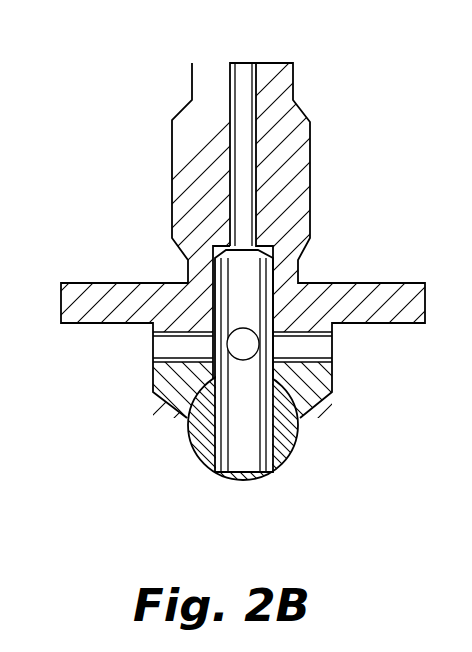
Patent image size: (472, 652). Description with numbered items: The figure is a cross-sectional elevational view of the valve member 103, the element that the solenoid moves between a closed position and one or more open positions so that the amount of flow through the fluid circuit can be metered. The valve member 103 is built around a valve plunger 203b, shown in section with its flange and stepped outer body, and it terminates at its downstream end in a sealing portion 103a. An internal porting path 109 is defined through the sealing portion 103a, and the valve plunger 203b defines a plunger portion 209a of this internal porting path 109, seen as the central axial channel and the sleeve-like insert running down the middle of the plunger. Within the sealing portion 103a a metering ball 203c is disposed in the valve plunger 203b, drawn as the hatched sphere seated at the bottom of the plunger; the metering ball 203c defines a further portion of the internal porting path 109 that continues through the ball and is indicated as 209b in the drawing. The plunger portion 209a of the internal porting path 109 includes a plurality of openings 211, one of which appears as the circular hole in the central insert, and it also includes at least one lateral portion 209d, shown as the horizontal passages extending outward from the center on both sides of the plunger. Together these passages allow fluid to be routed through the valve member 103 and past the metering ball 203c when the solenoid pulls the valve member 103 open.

The valve member 103 is at (236, 287).
The sealing portion 103a is at (320, 467).
The internal porting path 109 is at (242, 289).
The valve plunger 203b is at (298, 138).
The metering ball 203c is at (203, 437).
The plunger portion 209a is at (311, 356).
The sleeve bore 209b is at (243, 456).
The lateral portion 209d is at (160, 347).
The openings 211 is at (244, 344).